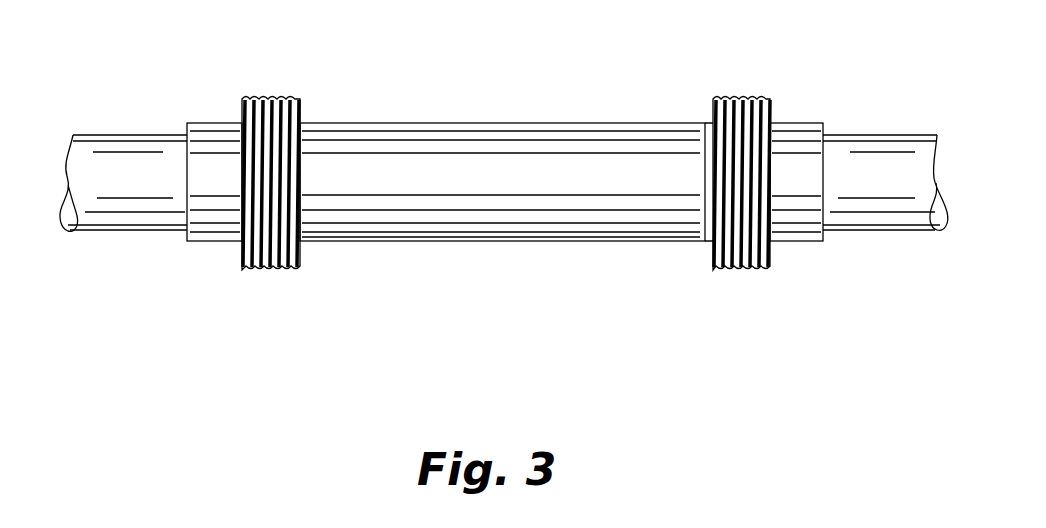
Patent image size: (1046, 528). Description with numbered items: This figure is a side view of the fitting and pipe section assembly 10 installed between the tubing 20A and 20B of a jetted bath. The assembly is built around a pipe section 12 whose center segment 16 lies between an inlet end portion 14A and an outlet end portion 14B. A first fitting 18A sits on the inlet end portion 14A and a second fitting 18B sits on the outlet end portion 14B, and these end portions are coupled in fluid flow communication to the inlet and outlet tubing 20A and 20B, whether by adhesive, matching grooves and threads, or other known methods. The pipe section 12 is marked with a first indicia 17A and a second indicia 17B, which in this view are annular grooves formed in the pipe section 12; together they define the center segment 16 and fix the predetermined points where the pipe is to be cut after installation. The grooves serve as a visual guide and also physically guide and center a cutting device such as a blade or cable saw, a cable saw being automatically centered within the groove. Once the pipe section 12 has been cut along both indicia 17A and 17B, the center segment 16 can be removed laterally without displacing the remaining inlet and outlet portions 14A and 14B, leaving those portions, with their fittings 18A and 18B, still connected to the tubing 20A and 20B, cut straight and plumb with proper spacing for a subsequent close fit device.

The fitting and pipe section assembly 10 is at (350, 297).
The pipe section 12 is at (460, 90).
The inlet end portion 14A is at (219, 123).
The outlet end portion 14B is at (789, 123).
The center segment 16 is at (513, 241).
The first indicia 17A is at (303, 123).
The second indicia 17B is at (707, 123).
The first fitting 18A is at (252, 270).
The second fitting 18B is at (735, 270).
The tubing 20A is at (132, 135).
The tubing 20B is at (900, 135).